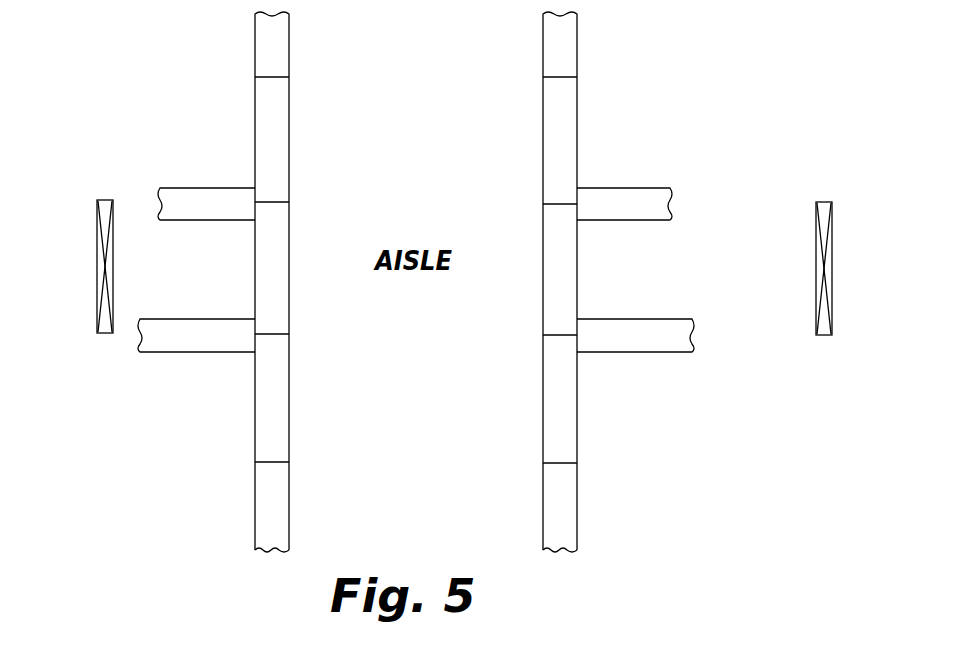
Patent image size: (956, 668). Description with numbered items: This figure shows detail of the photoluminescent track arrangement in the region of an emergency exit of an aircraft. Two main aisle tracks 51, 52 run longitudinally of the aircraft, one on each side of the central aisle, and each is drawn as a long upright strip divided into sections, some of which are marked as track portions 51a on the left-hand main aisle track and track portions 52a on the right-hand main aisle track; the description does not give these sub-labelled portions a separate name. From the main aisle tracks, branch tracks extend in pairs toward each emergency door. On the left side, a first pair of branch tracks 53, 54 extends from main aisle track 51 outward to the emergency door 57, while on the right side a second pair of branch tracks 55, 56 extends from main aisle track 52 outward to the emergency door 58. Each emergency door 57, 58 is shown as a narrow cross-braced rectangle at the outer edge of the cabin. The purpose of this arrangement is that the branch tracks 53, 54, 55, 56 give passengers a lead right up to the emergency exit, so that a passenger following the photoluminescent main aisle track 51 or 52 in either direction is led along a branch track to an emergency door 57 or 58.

The main aisle track 51 is at (283, 95).
The column segment 51a is at (280, 177).
The main aisle track 52 is at (562, 86).
The column segment 52a is at (555, 127).
The branch track 53 is at (195, 197).
The branch track 54 is at (205, 337).
The branch track 55 is at (635, 193).
The branch track 56 is at (661, 342).
The emergency door 57 is at (97, 208).
The emergency door 58 is at (818, 232).